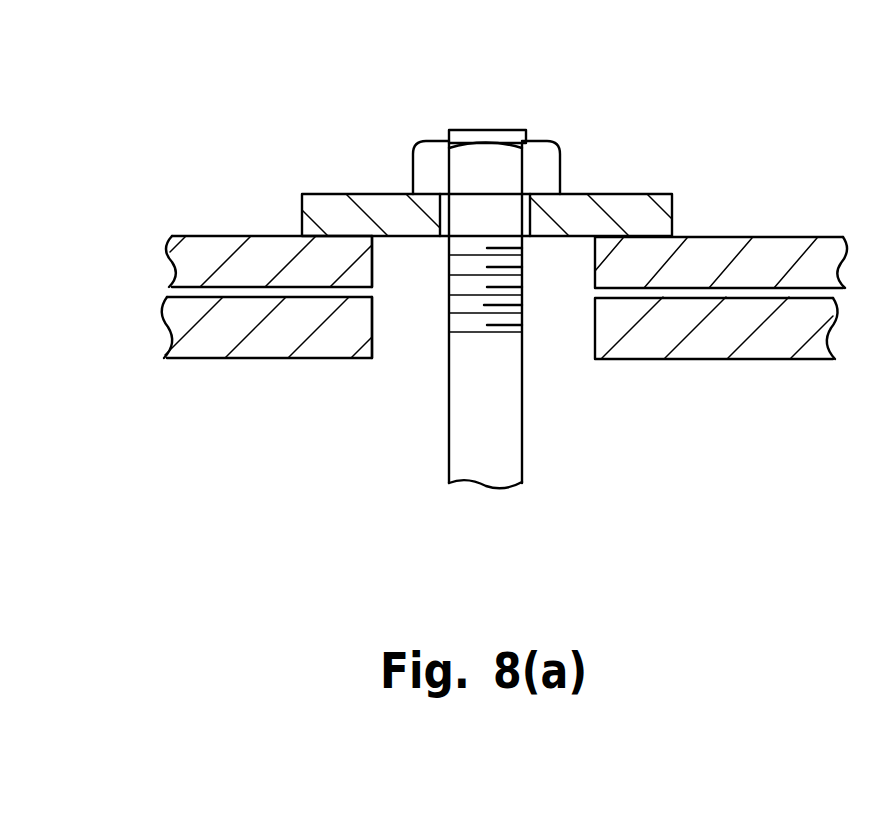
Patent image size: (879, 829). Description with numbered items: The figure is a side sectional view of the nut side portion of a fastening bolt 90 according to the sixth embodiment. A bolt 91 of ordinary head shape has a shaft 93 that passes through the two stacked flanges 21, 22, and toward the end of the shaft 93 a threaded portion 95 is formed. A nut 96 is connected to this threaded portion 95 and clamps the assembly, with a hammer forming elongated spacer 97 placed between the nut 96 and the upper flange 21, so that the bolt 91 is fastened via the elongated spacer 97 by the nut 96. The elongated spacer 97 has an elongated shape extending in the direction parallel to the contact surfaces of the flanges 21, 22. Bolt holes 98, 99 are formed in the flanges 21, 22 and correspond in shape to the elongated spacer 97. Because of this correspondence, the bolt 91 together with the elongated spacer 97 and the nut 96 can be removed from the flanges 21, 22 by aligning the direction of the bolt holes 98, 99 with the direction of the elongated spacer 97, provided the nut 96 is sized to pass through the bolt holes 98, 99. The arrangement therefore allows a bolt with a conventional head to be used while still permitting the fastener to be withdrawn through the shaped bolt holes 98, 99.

The fastening bolt 90 is at (645, 68).
The bolt 91 is at (508, 121).
The shaft 93 is at (503, 410).
The threaded portion 95 is at (523, 303).
The nut 96 is at (537, 168).
The hammer forming elongated spacer 97 is at (630, 208).
The bolt hole 98 is at (377, 262).
The bolt hole 99 is at (373, 327).
The flange 21 is at (769, 253).
The flange 22 is at (757, 350).